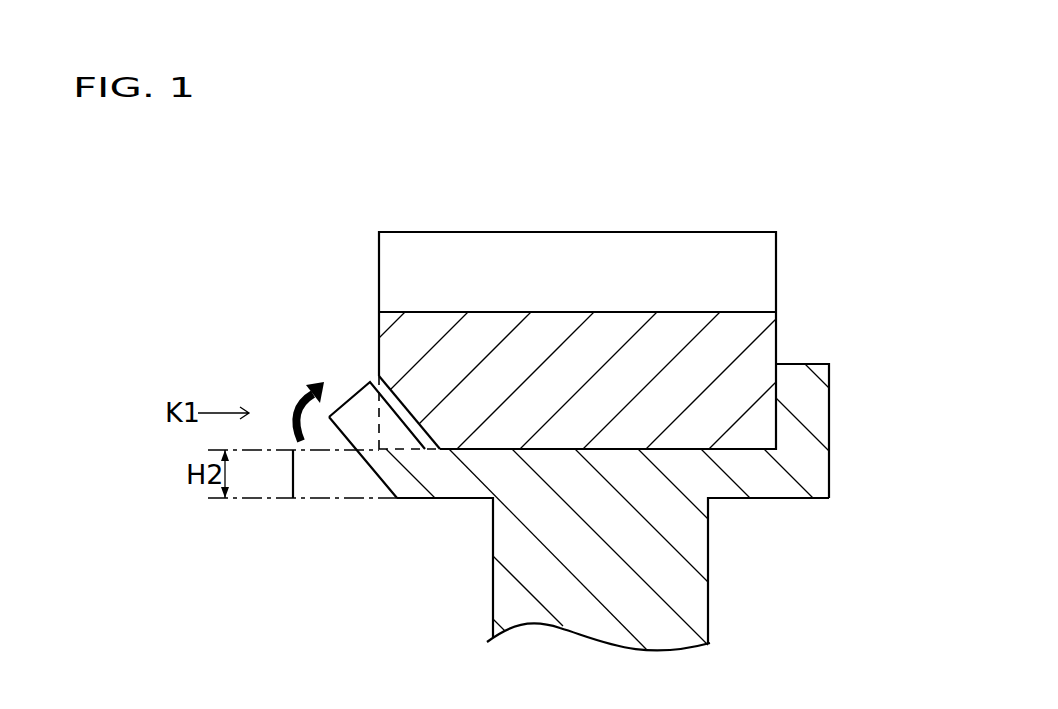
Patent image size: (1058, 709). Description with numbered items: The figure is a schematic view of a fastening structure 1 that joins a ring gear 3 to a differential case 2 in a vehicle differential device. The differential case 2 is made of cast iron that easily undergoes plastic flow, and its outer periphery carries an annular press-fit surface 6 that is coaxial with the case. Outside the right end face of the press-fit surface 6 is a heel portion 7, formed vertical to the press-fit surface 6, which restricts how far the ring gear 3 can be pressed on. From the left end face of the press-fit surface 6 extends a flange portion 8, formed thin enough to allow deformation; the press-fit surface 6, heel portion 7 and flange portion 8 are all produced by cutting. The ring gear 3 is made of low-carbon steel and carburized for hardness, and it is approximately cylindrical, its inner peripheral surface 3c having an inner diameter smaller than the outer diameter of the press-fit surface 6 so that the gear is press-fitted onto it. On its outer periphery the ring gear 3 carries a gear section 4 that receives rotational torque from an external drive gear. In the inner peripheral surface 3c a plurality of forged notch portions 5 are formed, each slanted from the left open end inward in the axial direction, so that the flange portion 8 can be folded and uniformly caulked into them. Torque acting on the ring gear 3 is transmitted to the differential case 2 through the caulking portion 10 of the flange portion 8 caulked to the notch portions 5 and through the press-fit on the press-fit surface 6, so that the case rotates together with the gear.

The fastening structure 1 is at (723, 178).
The differential case 2 is at (730, 564).
The ring gear 3 is at (797, 329).
The inner peripheral surface 3c is at (473, 448).
The gear section 4 is at (582, 288).
The notch portion 5 is at (396, 400).
The press-fit surface 6 is at (740, 447).
The heel portion 7 is at (828, 370).
The flange portion 8 is at (352, 400).
The caulking portion 10 is at (399, 433).